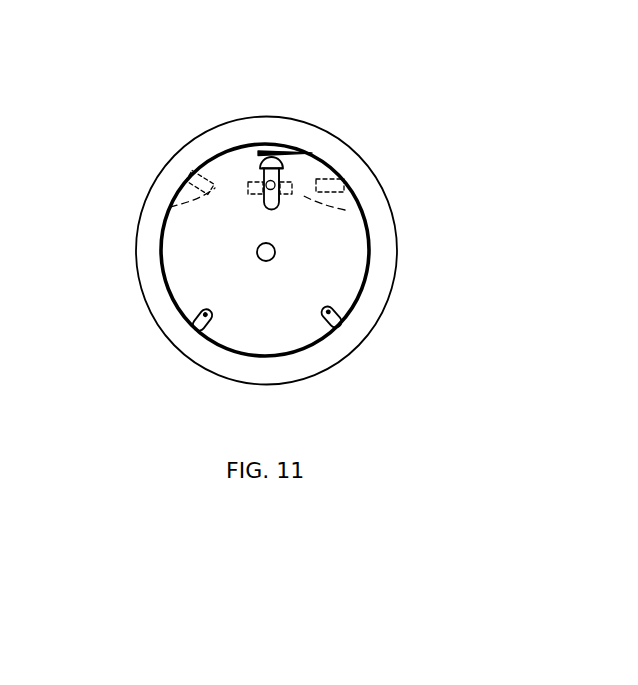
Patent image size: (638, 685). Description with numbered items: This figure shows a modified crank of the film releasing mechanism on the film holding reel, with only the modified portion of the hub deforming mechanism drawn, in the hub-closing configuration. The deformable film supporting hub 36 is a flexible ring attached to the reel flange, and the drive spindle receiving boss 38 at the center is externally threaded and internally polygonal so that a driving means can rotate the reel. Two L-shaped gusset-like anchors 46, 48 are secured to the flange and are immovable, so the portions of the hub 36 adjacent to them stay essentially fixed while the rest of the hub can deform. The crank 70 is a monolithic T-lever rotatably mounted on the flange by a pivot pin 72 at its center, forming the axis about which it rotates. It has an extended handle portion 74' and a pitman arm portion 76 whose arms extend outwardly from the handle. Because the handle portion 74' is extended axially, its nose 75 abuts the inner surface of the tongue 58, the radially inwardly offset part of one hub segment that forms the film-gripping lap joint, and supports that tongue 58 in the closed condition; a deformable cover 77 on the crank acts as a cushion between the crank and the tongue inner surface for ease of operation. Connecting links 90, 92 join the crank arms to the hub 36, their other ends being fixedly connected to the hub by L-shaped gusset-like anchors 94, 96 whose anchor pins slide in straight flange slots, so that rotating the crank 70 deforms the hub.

The deformable film supporting hub 36 is at (372, 238).
The drive spindle receiving boss 38 is at (266, 262).
The L-shaped gusset-like anchor 46 is at (201, 322).
The L-shaped gusset-like anchor 48 is at (334, 320).
The tongue 58 is at (270, 181).
The crank 70 is at (256, 202).
The pivot pin 72 is at (260, 151).
The handle portion 74' is at (366, 164).
The nose 75 is at (273, 152).
The pitman arm portion 76 is at (290, 207).
The cover 77 is at (283, 155).
The connecting link 90 is at (170, 207).
The connecting link 92 is at (345, 210).
The L-shaped gusset-like anchor 94 is at (197, 166).
The L-shaped gusset-like anchor 96 is at (344, 183).